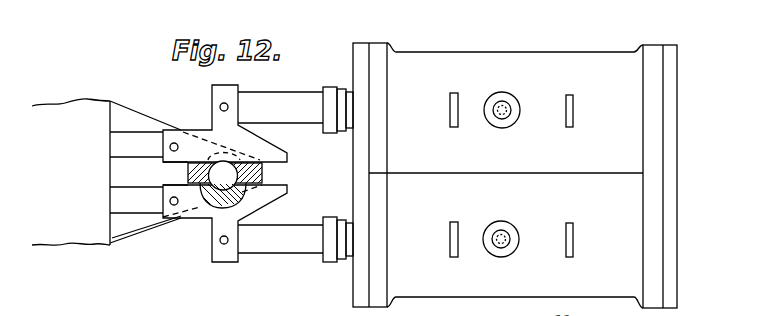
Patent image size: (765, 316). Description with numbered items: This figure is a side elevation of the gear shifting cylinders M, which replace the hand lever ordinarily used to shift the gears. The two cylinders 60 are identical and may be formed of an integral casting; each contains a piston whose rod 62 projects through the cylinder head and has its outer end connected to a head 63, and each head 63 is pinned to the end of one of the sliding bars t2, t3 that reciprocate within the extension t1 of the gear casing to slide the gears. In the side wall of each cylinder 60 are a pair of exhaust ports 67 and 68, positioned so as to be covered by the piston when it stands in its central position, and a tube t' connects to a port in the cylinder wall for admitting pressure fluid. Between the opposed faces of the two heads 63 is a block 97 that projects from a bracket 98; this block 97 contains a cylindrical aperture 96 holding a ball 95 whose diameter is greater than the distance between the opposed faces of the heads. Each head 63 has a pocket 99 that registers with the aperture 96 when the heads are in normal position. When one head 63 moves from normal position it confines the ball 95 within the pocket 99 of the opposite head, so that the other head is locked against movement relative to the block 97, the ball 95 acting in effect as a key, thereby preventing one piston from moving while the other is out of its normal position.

The gear shifting cylinders M is at (515, 162).
The cylinder 60 is at (506, 133).
The rod 62 is at (288, 100).
The head 63 is at (218, 128).
The exhaust port 67 is at (452, 128).
The exhaust port 68 is at (574, 111).
The ball 95 is at (208, 206).
The cylindrical aperture 96 is at (188, 174).
The block 97 is at (265, 175).
The bracket 98 is at (126, 228).
The pocket 99 is at (270, 148).
The frame member t1 is at (102, 172).
The upper rail t2 is at (130, 143).
The lower rail t3 is at (128, 198).
The shaft end t' is at (509, 170).